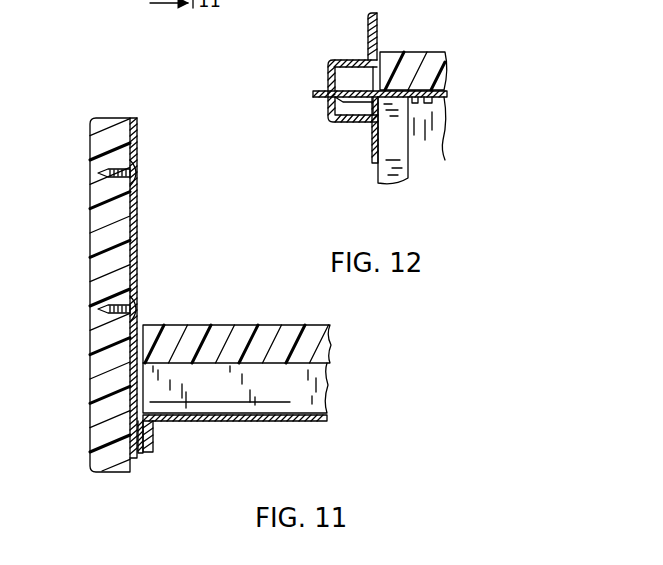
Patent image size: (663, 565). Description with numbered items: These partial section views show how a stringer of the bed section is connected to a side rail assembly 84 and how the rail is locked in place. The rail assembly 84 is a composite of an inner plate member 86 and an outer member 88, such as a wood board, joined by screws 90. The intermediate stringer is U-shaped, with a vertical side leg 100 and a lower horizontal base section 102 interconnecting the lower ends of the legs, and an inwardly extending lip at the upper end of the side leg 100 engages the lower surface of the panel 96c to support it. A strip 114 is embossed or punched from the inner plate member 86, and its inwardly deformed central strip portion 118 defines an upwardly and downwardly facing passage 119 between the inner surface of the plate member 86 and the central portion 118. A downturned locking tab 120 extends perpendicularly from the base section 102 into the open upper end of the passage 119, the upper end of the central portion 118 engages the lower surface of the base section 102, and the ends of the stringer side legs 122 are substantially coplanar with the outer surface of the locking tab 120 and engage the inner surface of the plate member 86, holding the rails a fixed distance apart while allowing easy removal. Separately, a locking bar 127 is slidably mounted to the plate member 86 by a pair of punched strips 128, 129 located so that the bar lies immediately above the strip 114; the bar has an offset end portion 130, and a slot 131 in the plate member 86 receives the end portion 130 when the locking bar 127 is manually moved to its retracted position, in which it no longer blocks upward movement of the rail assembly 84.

In FIG. 11, the side rail assembly 84 is at (147, 108).
In FIG. 11, the inner plate member 86 is at (142, 217).
In FIG. 12, the inner plate member 86 is at (450, 94).
In FIG. 11, the outer member 88 is at (86, 220).
In FIG. 11, the screws 90 is at (138, 173).
In FIG. 11, the panel 96c is at (303, 324).
In FIG. 12, the panel 96c is at (413, 71).
In FIG. 11, the side leg 100 is at (324, 378).
In FIG. 12, the side leg 100 is at (412, 140).
In FIG. 11, the lower base section 102 is at (300, 422).
In FIG. 11, the strip 114 is at (160, 448).
In FIG. 11, the central strip portion 118 is at (153, 433).
In FIG. 11, the passage 119 is at (149, 453).
In FIG. 11, the locking tab 120 is at (143, 456).
In FIG. 11, the ends of stringer side legs 122 is at (140, 390).
In FIG. 12, the locking bar 127 is at (362, 108).
In FIG. 12, the punched strip 128 is at (420, 105).
In FIG. 12, the punched strip 129 is at (428, 105).
In FIG. 12, the offset end portion 130 is at (330, 80).
In FIG. 12, the slot 131 is at (357, 91).